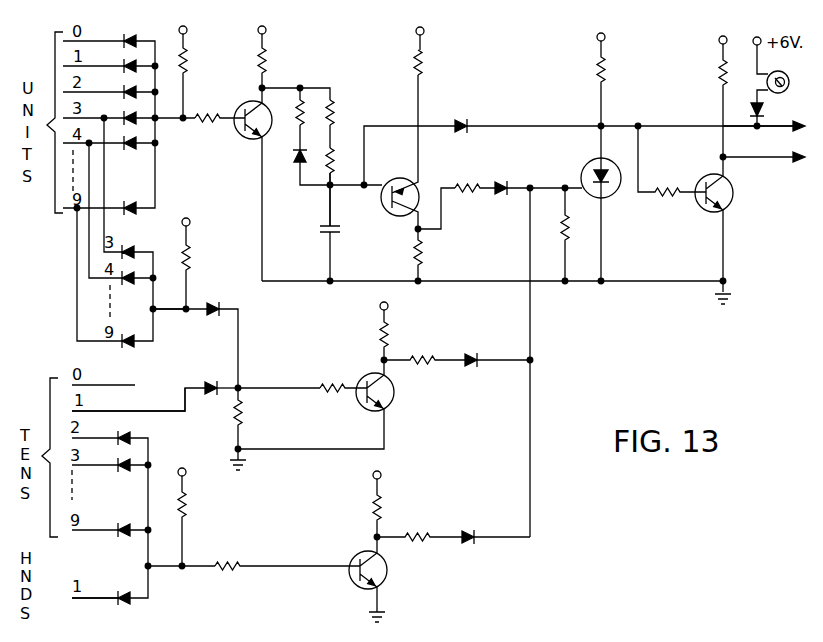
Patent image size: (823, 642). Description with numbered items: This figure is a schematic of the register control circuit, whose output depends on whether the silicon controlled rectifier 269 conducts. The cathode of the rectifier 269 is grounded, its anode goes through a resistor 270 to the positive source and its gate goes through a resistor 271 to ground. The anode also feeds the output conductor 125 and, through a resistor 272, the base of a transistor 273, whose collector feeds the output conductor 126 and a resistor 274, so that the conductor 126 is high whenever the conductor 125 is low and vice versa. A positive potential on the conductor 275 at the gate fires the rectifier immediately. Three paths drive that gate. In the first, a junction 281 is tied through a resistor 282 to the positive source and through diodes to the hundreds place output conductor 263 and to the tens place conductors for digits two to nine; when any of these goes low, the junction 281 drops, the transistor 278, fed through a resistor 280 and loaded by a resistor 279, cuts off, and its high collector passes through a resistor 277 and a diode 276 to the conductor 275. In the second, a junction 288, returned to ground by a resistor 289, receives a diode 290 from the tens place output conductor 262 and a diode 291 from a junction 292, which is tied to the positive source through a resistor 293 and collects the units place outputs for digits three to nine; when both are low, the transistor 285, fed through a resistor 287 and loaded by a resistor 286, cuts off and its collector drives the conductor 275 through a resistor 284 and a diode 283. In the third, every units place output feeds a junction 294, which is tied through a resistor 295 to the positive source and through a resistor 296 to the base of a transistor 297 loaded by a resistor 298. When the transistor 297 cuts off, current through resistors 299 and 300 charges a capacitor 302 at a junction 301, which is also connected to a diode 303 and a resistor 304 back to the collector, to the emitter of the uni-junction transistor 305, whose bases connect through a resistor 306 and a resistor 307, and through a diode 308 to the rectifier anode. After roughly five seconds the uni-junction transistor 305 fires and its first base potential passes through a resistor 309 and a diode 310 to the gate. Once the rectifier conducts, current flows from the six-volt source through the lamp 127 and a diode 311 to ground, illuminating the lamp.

The output conductor 125 is at (769, 129).
The output conductor 126 is at (770, 160).
The lamp 127 is at (786, 76).
The tens place output conductor 262 is at (116, 411).
The hundreds place output conductor 263 is at (98, 600).
The silicon controlled rectifier 269 is at (586, 176).
The resistor 270 is at (605, 78).
The resistor 271 is at (569, 228).
The resistor 272 is at (666, 194).
The transistor 273 is at (707, 178).
The resistor 274 is at (719, 80).
The conductor 275 is at (532, 308).
The diode 276 is at (490, 525).
The resistor 277 is at (421, 534).
The transistor 278 is at (388, 583).
The resistor 279 is at (372, 514).
The resistor 280 is at (230, 564).
The junction 281 is at (184, 569).
The resistor 282 is at (188, 512).
The diode 283 is at (473, 357).
The resistor 284 is at (421, 357).
The transistor 285 is at (395, 401).
The resistor 286 is at (380, 336).
The resistor 287 is at (327, 384).
The junction 288 is at (240, 386).
The resistor 289 is at (243, 409).
The diode 290 is at (205, 386).
The diode 291 is at (213, 306).
The junction 292 is at (184, 311).
The resistor 293 is at (200, 266).
The junction 294 is at (182, 120).
The resistor 295 is at (187, 69).
The resistor 296 is at (208, 115).
The transistor 297 is at (245, 134).
The resistor 298 is at (266, 71).
The resistor 299 is at (333, 110).
The resistor 300 is at (334, 160).
The junction 301 is at (331, 187).
The capacitor 302 is at (341, 230).
The diode 303 is at (299, 161).
The resistor 304 is at (303, 110).
The uni-junction transistor 305 is at (404, 182).
The resistor 306 is at (440, 70).
The resistor 307 is at (422, 252).
The diode 308 is at (461, 124).
The resistor 309 is at (471, 186).
The diode 310 is at (503, 194).
The diode 311 is at (766, 109).